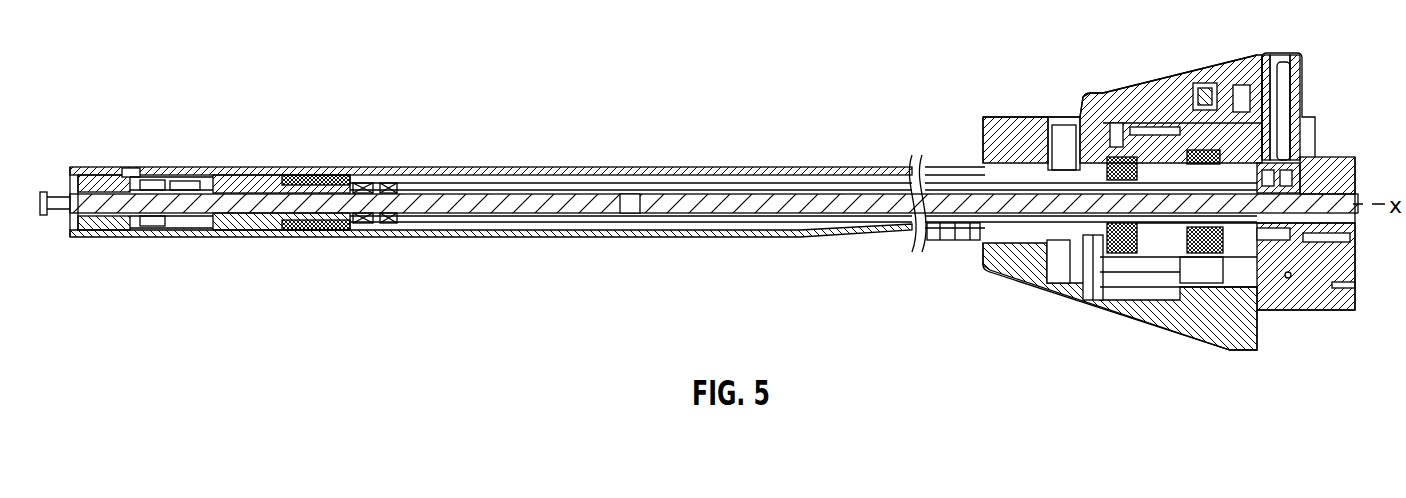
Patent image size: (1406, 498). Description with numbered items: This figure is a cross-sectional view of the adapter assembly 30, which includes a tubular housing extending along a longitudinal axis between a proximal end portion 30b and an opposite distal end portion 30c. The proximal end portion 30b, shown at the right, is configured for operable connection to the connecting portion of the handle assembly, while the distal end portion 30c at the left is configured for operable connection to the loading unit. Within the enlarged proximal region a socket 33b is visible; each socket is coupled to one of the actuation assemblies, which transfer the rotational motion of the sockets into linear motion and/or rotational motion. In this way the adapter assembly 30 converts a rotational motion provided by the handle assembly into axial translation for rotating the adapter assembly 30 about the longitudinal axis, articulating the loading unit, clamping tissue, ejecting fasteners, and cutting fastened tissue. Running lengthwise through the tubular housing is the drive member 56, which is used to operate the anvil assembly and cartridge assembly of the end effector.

The adapter assembly 30 is at (1182, 78).
The proximal end portion 30b is at (1315, 138).
The distal end portion 30c is at (110, 233).
The socket 33b is at (1358, 198).
The drive member 56 is at (42, 196).